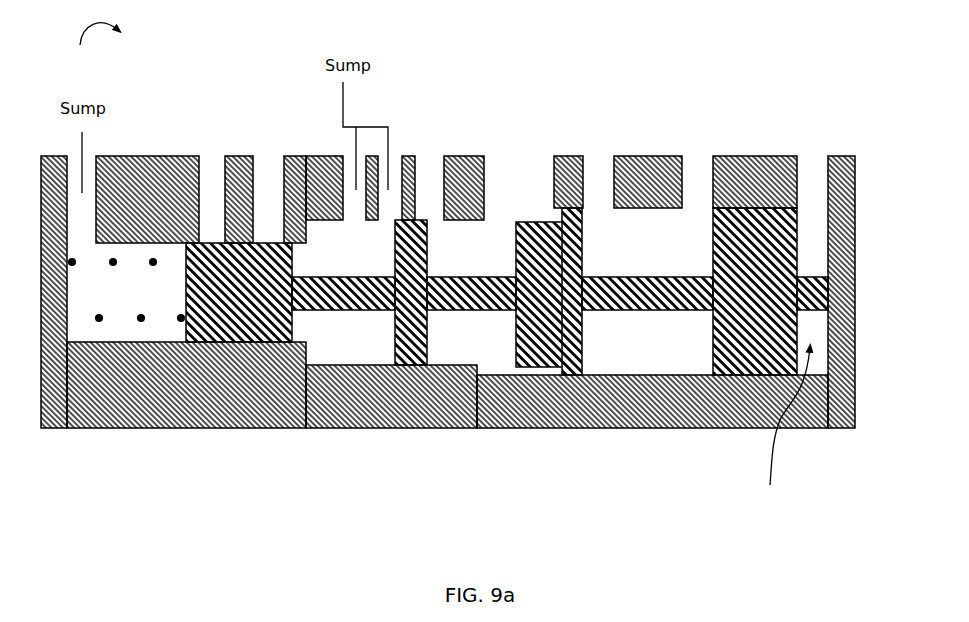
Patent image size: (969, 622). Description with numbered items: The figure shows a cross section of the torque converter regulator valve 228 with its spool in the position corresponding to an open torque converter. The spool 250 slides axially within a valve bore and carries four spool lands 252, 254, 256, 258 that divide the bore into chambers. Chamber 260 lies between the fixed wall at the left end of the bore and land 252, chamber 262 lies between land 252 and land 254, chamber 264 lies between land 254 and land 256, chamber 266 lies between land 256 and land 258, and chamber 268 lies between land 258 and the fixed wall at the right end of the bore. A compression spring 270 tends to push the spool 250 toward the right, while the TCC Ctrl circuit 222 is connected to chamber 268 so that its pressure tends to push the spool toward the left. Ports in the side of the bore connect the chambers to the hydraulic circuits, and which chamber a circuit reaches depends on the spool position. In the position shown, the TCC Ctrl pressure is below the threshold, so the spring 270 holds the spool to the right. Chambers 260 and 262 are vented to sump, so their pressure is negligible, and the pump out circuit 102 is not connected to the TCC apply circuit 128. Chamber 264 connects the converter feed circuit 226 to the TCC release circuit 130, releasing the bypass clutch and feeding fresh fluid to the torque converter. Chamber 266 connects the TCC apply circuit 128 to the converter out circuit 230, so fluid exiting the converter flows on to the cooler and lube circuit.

The torque converter regulator valve 228 is at (95, 47).
The pump out circuit 102 is at (215, 190).
The TCC apply circuit 128 is at (698, 193).
The TCC release circuit 130 is at (430, 198).
The converter feed circuit 226 is at (516, 198).
The converter out circuit 230 is at (598, 180).
The TCC Ctrl circuit 222 is at (815, 213).
The spool 250 is at (607, 311).
The spool land 252 is at (225, 342).
The spool land 254 is at (408, 365).
The spool land 256 is at (538, 367).
The spool land 258 is at (743, 375).
The chamber 260 is at (114, 297).
The chamber 262 is at (323, 266).
The chamber 264 is at (438, 266).
The chamber 266 is at (606, 252).
The chamber 268 is at (783, 430).
The compression spring 270 is at (141, 322).